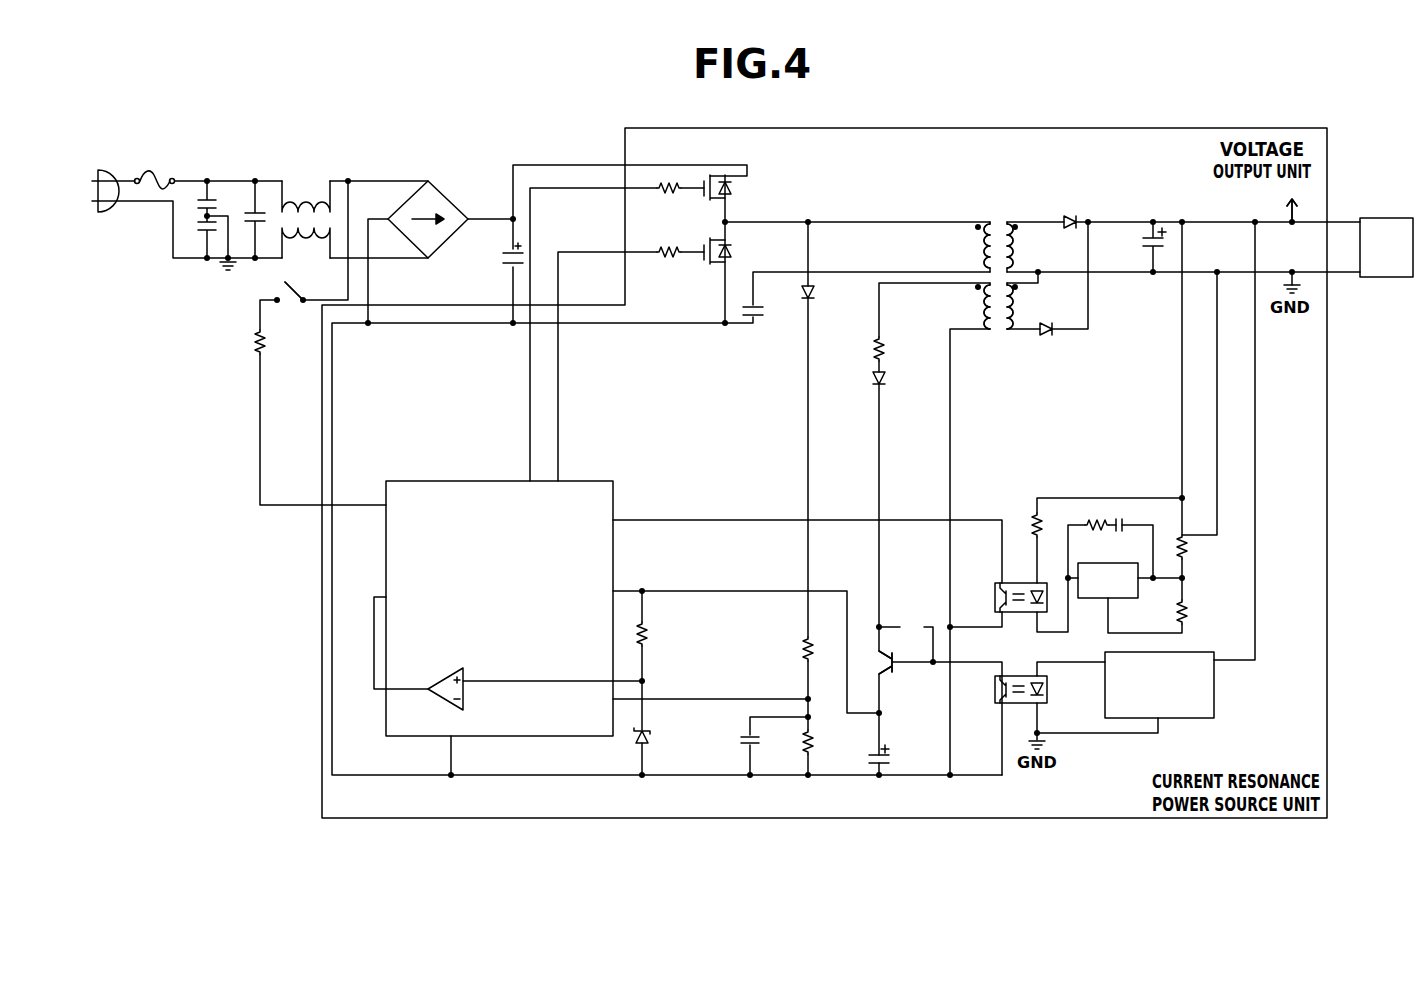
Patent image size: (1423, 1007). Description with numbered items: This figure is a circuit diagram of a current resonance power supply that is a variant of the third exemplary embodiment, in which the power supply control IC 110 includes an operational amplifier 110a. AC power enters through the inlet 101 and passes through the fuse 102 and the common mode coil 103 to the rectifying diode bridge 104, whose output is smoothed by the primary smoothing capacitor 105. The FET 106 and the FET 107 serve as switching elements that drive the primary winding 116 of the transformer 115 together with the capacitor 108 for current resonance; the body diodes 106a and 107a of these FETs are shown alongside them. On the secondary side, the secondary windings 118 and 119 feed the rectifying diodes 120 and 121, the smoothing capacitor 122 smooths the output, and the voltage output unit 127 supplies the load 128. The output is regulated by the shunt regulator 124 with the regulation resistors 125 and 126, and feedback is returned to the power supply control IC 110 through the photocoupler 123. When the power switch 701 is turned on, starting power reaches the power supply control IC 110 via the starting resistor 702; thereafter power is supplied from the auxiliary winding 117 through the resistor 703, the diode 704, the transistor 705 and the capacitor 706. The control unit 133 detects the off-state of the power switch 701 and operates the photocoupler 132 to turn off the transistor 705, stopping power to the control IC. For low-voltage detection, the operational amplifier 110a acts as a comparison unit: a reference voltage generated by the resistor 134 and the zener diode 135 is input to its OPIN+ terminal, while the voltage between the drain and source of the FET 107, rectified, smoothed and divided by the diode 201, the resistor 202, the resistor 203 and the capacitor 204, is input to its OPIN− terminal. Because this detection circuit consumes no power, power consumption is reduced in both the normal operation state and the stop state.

The inlet 101 is at (110, 170).
The fuse 102 is at (152, 170).
The common mode coil 103 is at (298, 182).
The rectifying diode bridge 104 is at (445, 186).
The primary smoothing capacitor 105 is at (497, 262).
The FET 106 is at (716, 174).
The body diode of FET 106 106a is at (733, 190).
The FET 107 is at (702, 260).
The body diode of FET 107 107a is at (733, 250).
The capacitor for current resonance 108 is at (748, 322).
The power supply control IC 110 is at (522, 738).
The operational amplifier 110a is at (442, 672).
The transformer 115 is at (990, 222).
The primary winding 116 is at (974, 250).
The auxiliary winding 117 is at (974, 308).
The secondary winding 118 is at (1022, 248).
The secondary winding 119 is at (1022, 308).
The rectifying diode 120 is at (1071, 220).
The rectifying diode 121 is at (1054, 333).
The smoothing capacitor 122 is at (1140, 250).
The photocoupler 123 is at (994, 581).
The shunt regulator 124 is at (1115, 600).
The regulation resistor 125 is at (1187, 548).
The regulation resistor 126 is at (1187, 612).
The voltage output unit 127 is at (1288, 218).
The load 128 is at (1385, 279).
The photocoupler 132 is at (1048, 694).
The control unit 133 is at (1214, 690).
The resistor 134 is at (648, 630).
The zener diode 135 is at (648, 740).
The diode 201 is at (815, 292).
The resistor 202 is at (803, 648).
The resistor 203 is at (803, 742).
The capacitor 204 is at (745, 740).
The power switch 701 is at (302, 308).
The starting resistor 702 is at (256, 338).
The resistor 703 is at (886, 347).
The diode 704 is at (886, 378).
The transistor 705 is at (890, 672).
The capacitor 706 is at (890, 758).